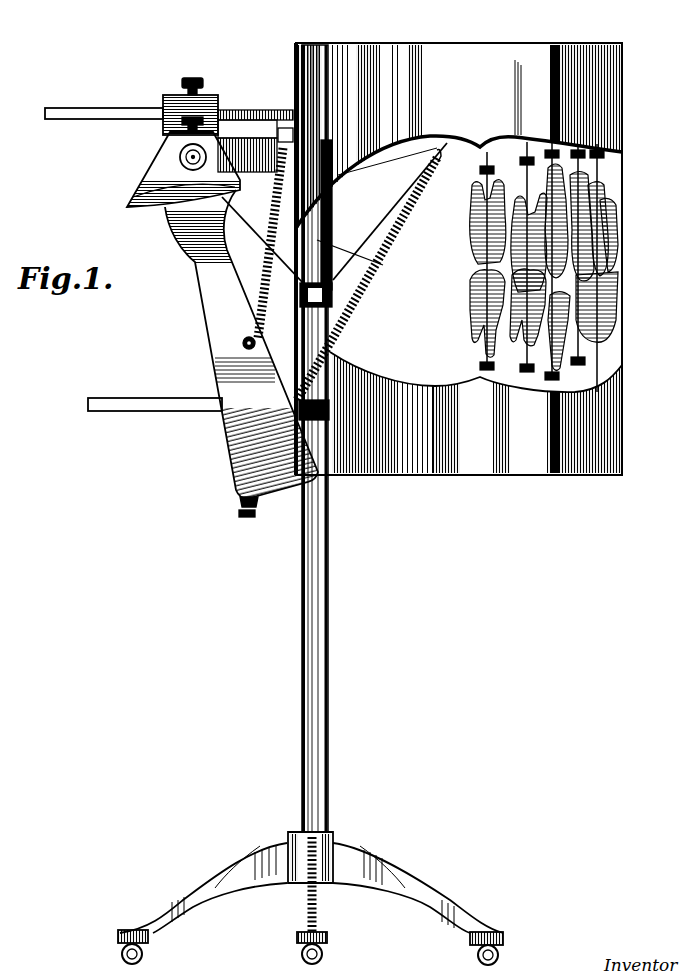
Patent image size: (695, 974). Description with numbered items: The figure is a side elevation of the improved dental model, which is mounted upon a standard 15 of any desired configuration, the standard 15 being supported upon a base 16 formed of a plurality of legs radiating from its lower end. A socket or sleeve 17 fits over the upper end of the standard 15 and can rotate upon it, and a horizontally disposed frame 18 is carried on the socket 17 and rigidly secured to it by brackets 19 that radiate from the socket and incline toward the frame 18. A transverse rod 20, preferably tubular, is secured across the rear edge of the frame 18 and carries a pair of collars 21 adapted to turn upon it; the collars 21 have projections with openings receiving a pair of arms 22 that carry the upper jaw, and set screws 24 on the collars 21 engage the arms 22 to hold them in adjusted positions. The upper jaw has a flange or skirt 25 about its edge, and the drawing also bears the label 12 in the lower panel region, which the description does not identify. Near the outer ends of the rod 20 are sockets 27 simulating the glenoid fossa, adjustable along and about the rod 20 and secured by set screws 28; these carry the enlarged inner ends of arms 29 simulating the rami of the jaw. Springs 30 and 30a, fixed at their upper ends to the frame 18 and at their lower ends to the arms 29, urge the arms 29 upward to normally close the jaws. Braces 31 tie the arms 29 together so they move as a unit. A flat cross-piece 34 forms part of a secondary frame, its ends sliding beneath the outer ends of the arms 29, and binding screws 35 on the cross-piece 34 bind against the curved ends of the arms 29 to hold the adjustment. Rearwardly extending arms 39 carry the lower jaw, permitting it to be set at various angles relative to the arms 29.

The lower panel of cabinet 12 is at (440, 419).
The standard 15 is at (330, 322).
The base 16 is at (310, 898).
The socket or sleeve 17 is at (333, 218).
The frame 18 is at (381, 168).
The brackets 19 is at (232, 214).
The transverse rod 20 is at (180, 157).
The collars 21 is at (218, 104).
The arms 22 is at (122, 120).
The set screws 24 is at (205, 82).
The flange or skirt 25 is at (459, 259).
The sockets 27 is at (146, 178).
The set screws 28 is at (255, 141).
The arms 29 is at (207, 290).
The spring 30 is at (272, 252).
The spring 30a is at (383, 265).
The braces 31 is at (243, 343).
The cross-piece 34 is at (240, 501).
The binding screws 35 is at (239, 514).
The arms 39 is at (165, 405).